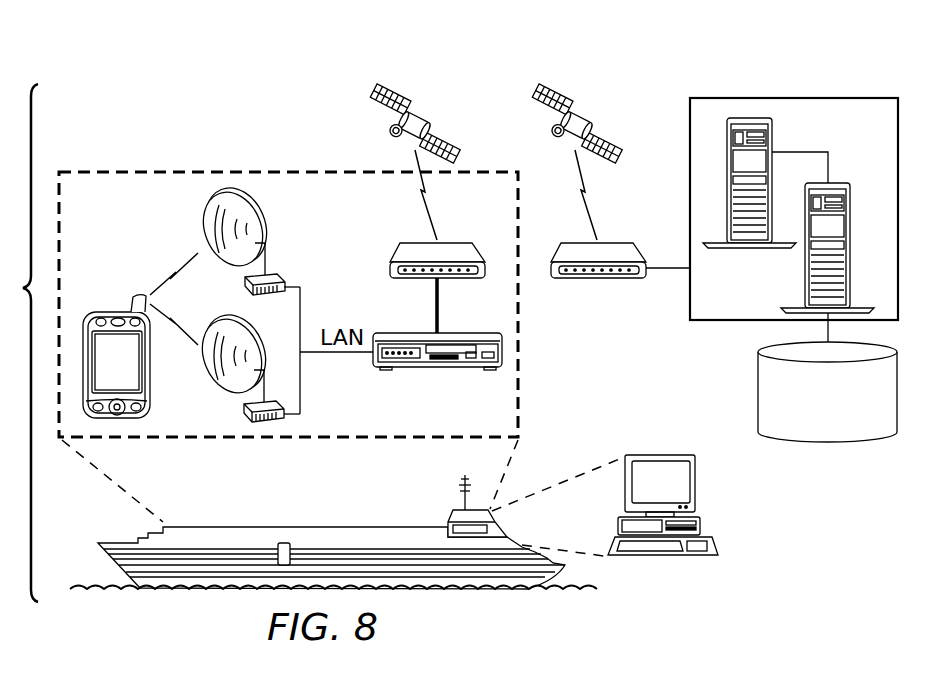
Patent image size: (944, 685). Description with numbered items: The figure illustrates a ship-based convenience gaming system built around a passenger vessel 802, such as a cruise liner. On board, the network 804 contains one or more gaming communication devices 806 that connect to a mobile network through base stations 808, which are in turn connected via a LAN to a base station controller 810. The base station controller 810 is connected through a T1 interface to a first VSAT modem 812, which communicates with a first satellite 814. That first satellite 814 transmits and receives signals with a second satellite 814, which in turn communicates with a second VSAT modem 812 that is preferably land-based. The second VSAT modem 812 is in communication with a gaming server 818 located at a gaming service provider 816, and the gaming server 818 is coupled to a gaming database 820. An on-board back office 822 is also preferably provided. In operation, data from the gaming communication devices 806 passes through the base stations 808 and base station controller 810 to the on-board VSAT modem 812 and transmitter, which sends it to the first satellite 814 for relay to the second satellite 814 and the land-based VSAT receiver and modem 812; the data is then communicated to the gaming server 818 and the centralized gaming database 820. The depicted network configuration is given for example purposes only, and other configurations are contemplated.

The passenger vessel 802 is at (276, 527).
The onboard network (dashed region) 804 is at (254, 169).
The gaming communication device 806 is at (112, 311).
The base station 808 is at (205, 223).
The base station controller 810 is at (455, 370).
The VSAT modem 812 is at (454, 243).
The satellite 814 is at (433, 117).
The gaming service provider 816 is at (794, 179).
The gaming server 818 is at (839, 183).
The gaming database 820 is at (838, 448).
The on-board back office 822 is at (697, 488).